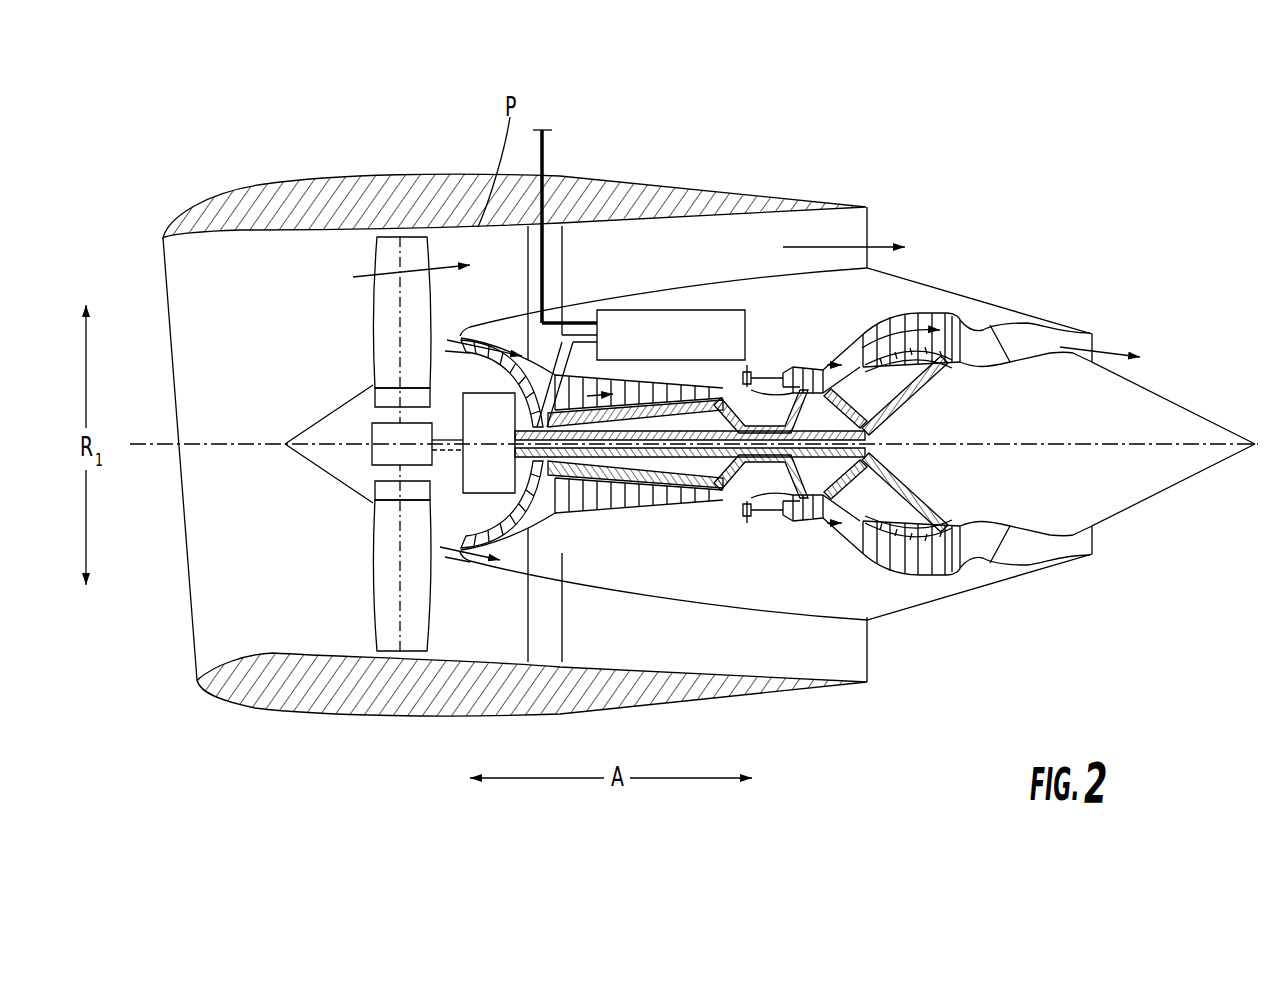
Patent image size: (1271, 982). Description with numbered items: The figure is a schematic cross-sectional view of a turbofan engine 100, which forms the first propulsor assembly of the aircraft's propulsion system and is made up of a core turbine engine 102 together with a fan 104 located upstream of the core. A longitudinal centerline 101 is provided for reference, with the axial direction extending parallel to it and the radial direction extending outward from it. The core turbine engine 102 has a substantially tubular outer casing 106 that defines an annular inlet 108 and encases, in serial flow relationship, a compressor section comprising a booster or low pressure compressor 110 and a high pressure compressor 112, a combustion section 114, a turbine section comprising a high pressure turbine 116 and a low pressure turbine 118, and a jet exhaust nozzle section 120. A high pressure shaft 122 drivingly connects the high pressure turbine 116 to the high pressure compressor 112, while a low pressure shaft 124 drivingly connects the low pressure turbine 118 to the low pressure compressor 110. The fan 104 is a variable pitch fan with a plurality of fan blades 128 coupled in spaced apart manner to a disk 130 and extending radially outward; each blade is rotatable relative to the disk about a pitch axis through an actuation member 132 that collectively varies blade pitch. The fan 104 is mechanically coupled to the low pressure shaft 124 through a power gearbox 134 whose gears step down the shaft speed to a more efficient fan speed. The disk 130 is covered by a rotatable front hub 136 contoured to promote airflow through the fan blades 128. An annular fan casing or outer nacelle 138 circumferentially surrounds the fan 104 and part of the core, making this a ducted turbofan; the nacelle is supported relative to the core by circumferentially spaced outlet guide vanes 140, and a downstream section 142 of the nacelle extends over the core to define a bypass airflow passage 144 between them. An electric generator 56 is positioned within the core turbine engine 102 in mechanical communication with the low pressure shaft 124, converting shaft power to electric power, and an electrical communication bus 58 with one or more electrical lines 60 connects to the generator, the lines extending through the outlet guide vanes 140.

The electric generator 56 is at (746, 324).
The electrical communication bus 58 is at (522, 155).
The electrical lines 60 is at (546, 156).
The turbofan engine 100 is at (1010, 190).
The longitudinal centerline 101 is at (1033, 440).
The core turbine engine 102 is at (665, 273).
The fan 104 is at (334, 262).
The outer casing 106 is at (713, 620).
The annular inlet 108 is at (473, 557).
The low pressure compressor 110 is at (475, 560).
The high pressure compressor 112 is at (594, 497).
The combustion section 114 is at (767, 508).
The high pressure turbine 116 is at (845, 511).
The low pressure turbine 118 is at (947, 572).
The jet exhaust nozzle section 120 is at (1007, 555).
The high pressure shaft 122 is at (808, 400).
The low pressure shaft 124 is at (897, 408).
The fan blades 128 is at (373, 592).
The disk 130 is at (377, 398).
The actuation member 132 is at (372, 430).
The power gearbox 134 is at (478, 392).
The front hub 136 is at (295, 458).
The outer nacelle 138 is at (423, 717).
The outlet guide vanes 140 is at (565, 253).
The downstream section 142 is at (797, 193).
The bypass airflow passage 144 is at (757, 262).